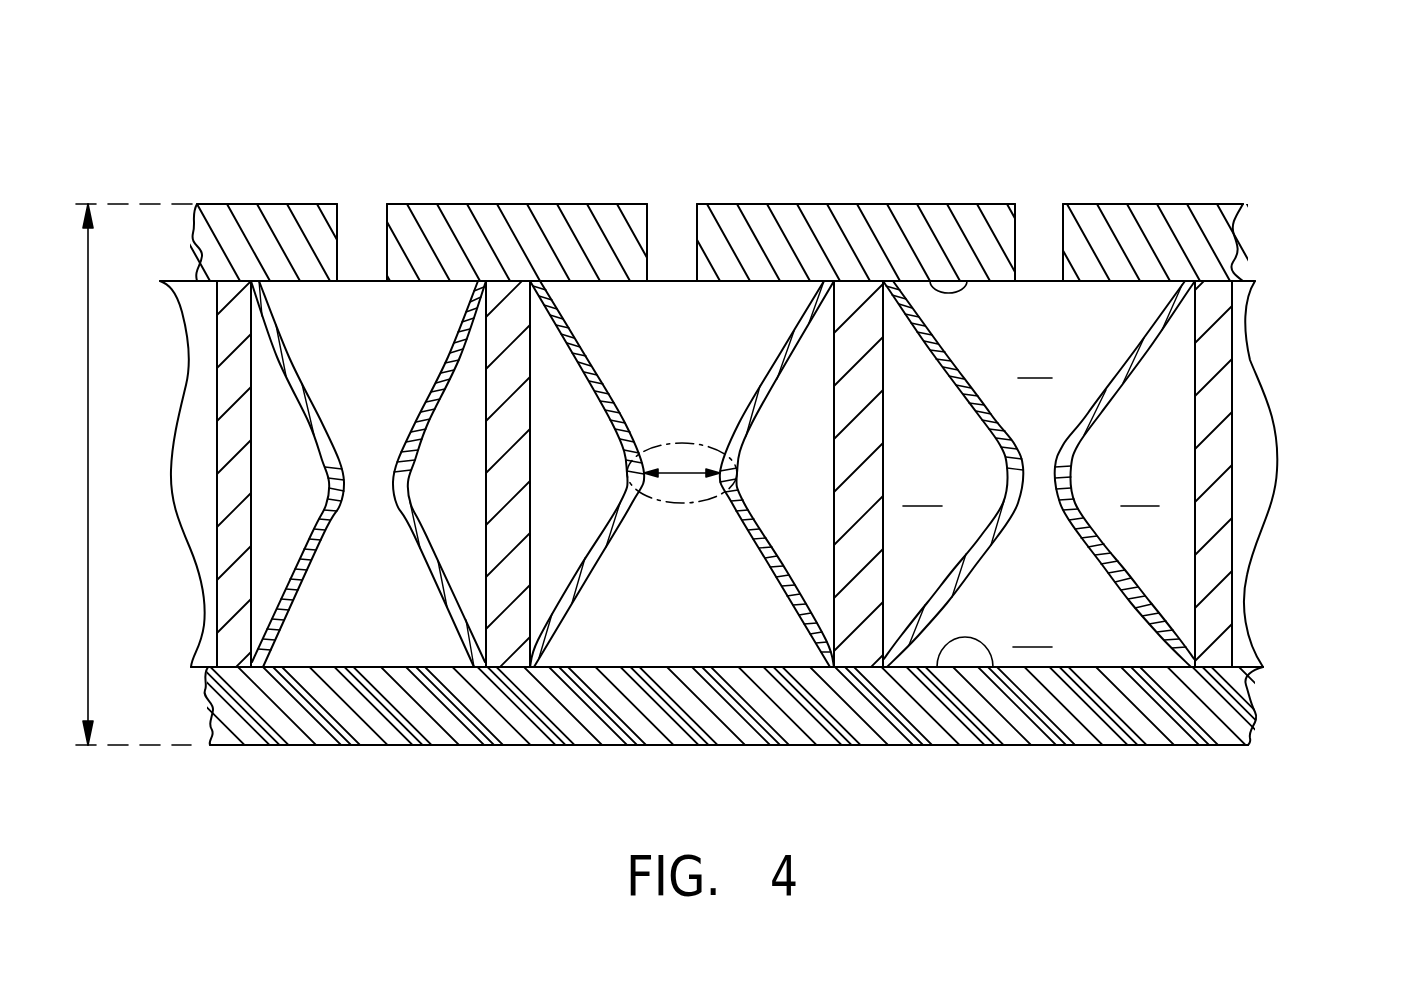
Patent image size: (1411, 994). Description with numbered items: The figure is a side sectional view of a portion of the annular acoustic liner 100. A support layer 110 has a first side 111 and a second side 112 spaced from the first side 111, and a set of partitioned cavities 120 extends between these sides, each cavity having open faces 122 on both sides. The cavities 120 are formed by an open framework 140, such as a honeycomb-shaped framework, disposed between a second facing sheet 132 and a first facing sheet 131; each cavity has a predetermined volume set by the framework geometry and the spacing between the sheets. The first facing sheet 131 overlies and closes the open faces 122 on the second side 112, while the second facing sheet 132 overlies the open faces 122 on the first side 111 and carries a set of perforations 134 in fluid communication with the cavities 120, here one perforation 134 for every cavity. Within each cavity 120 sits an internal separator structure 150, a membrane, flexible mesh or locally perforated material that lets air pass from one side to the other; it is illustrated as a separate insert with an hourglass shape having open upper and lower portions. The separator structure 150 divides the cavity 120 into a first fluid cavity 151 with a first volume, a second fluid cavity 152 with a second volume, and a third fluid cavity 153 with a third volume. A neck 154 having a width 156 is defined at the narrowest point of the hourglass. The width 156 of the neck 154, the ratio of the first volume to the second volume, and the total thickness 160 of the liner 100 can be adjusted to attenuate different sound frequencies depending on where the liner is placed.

The annular acoustic liner 100 is at (1192, 130).
The support layer 110 is at (1265, 346).
The first side 111 is at (1253, 281).
The second side 112 is at (1247, 667).
The partitioned cavities 120 is at (644, 474).
The open faces 122 is at (933, 281).
The first facing sheet 131 is at (1210, 729).
The second facing sheet 132 is at (1215, 250).
The perforations 134 is at (678, 223).
The open framework 140 is at (483, 617).
The internal separator structure 150 is at (283, 573).
The first fluid cavity 151 is at (1058, 328).
The second fluid cavity 152 is at (1059, 600).
The third fluid cavity 153 is at (950, 440).
The neck 154 is at (660, 446).
The width 156 is at (695, 477).
The total thickness 160 is at (89, 386).